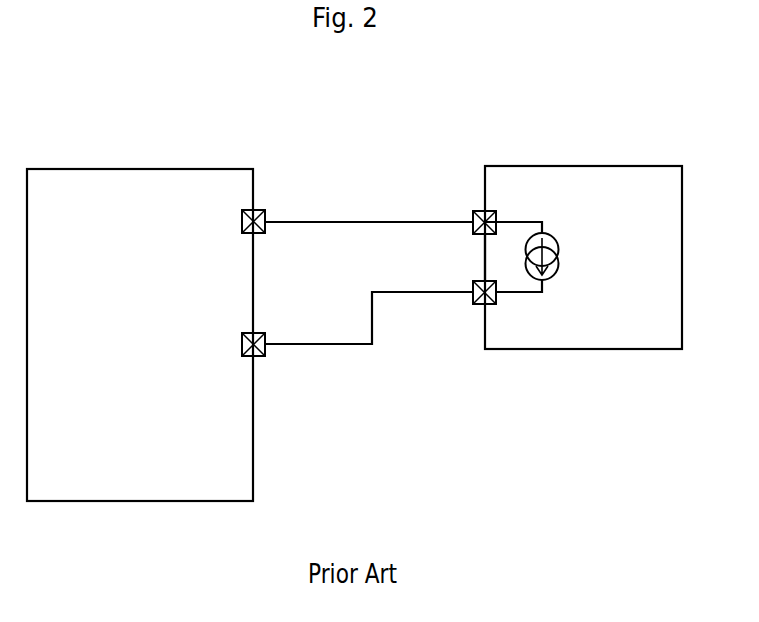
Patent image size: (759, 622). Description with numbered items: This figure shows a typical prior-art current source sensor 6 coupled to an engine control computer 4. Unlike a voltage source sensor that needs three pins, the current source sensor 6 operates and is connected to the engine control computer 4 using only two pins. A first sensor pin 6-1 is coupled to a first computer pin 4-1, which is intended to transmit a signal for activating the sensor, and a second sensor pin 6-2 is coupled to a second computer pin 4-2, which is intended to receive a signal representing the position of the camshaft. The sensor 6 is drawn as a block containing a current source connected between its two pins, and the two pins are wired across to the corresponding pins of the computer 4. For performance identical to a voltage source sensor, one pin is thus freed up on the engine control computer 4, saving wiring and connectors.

The engine control computer 4 is at (124, 168).
The first computer pin 4-1 is at (262, 210).
The second computer pin 4-2 is at (262, 354).
The current source sensor 6 is at (644, 166).
The first sensor pin 6-1 is at (480, 211).
The second sensor pin 6-2 is at (480, 305).